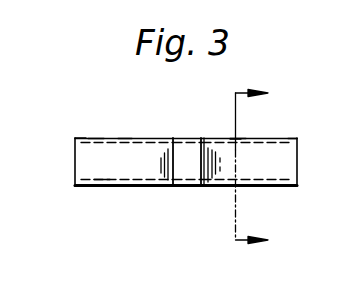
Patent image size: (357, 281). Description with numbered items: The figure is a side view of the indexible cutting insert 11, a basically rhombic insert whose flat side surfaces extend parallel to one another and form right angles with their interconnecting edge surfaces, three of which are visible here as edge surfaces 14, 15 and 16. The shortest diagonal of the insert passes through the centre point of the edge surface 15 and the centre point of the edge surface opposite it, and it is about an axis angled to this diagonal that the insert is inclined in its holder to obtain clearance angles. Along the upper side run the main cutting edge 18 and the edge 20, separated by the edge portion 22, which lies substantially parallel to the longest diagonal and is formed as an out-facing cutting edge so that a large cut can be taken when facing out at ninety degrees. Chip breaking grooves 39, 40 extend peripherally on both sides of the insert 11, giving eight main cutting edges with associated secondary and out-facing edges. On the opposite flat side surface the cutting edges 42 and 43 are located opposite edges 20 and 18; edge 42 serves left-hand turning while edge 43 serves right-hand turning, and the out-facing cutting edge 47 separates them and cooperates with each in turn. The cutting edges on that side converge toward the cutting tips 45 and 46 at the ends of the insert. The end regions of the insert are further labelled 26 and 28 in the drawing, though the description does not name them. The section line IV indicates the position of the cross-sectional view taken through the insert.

The indexible cutting insert 11 is at (97, 138).
The edge surface 14 is at (96, 159).
The edge surface 15 is at (184, 168).
The edge surface 16 is at (278, 167).
The main cutting edge 18 is at (125, 138).
The edge 20 is at (238, 141).
The out-facing cutting edge 22 is at (201, 121).
The right end edge 26 is at (323, 125).
The left end edge 28 is at (74, 138).
The chip breaking groove 39 is at (166, 121).
The chip breaking groove 40 is at (102, 181).
The cutting edge 42 is at (240, 186).
The cutting edge 43 is at (135, 186).
The cutting tip 45 is at (297, 186).
The cutting tip 46 is at (76, 186).
The out-facing cutting edge 47 is at (187, 186).
The section line IV- IV is at (262, 167).